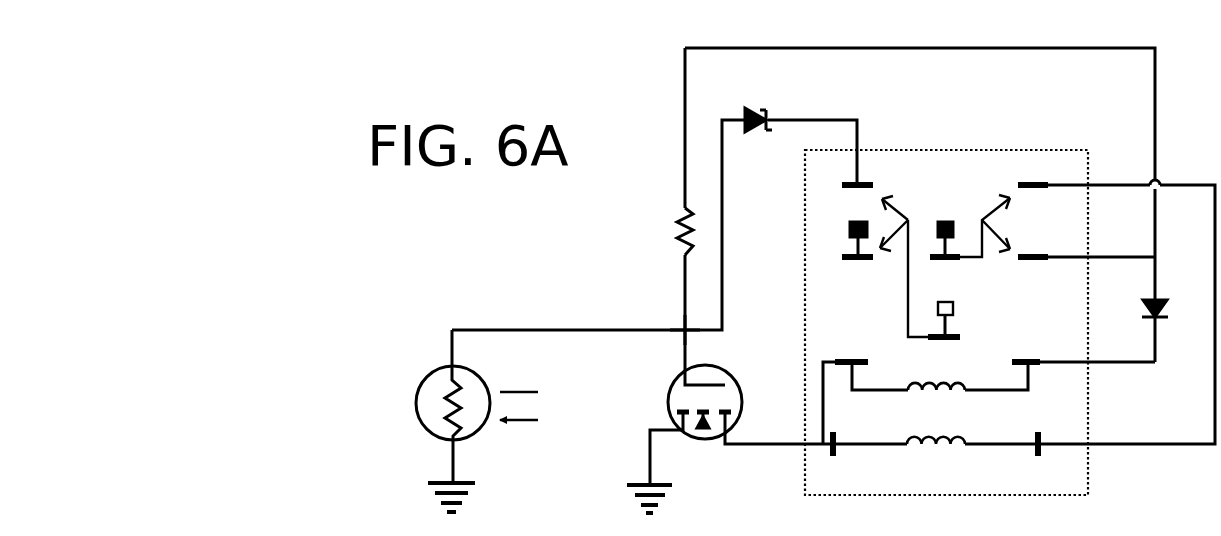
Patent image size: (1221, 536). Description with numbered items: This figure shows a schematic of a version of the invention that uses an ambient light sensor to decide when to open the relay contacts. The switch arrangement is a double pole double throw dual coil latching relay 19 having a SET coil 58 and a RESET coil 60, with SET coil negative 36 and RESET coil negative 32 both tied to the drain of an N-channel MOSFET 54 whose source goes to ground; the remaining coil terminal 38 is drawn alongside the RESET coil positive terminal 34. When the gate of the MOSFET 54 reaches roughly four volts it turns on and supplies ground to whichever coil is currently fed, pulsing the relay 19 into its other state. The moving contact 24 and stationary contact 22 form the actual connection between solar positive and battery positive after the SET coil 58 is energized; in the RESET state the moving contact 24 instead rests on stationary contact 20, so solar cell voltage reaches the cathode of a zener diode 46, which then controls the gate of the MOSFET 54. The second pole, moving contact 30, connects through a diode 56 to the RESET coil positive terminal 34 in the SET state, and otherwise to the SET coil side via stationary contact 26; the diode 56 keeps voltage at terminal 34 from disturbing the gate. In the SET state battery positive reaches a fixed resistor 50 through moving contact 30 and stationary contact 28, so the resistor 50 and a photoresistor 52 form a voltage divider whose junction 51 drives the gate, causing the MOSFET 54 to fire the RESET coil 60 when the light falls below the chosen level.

The double pole double throw dual coil latching relay 19 is at (943, 148).
The stationary contact 20 is at (843, 186).
The stationary contact 22 is at (843, 258).
The moving contact 24 is at (960, 338).
The stationary contact 26 is at (1047, 186).
The stationary contact 28 is at (1047, 258).
The moving contact 30 is at (959, 258).
The RESET coil negative 32 is at (853, 386).
The RESET coil positive terminal 34 is at (1027, 389).
The SET coil negative 36 is at (836, 443).
The coil terminal 38 is at (1036, 443).
The zener diode 46 is at (746, 117).
The fixed resistor 50 is at (678, 236).
The junction 51 is at (681, 327).
The photoresistor 52 is at (426, 383).
The N-channel MOSFET 54 is at (704, 433).
The diode 56 is at (1167, 318).
The SET coil 58 is at (938, 446).
The RESET coil 60 is at (956, 392).